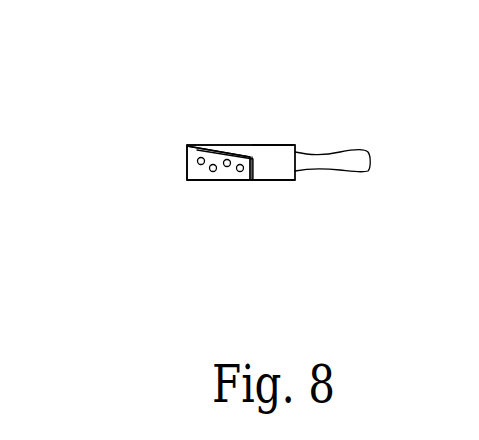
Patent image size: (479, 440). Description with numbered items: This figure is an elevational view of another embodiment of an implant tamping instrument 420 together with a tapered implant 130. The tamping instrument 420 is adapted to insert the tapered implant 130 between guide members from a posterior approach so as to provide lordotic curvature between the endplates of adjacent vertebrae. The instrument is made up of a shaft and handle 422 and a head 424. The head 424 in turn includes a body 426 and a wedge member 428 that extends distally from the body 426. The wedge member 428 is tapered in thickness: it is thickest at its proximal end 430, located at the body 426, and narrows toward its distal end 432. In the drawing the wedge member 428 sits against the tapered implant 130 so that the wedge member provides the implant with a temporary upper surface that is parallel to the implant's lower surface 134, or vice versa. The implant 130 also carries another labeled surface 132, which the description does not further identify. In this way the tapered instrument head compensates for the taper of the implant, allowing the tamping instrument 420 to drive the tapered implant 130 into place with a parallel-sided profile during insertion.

The tapered implant 130 is at (184, 186).
The perforated plate 132 is at (187, 144).
The lower surface 134 is at (232, 181).
The tamping instrument 420 is at (360, 123).
The shaft and handle 422 is at (345, 167).
The head 424 is at (268, 193).
The body 426 is at (283, 143).
The wedge member 428 is at (218, 143).
The proximal end 430 is at (257, 143).
The distal end 432 is at (197, 144).